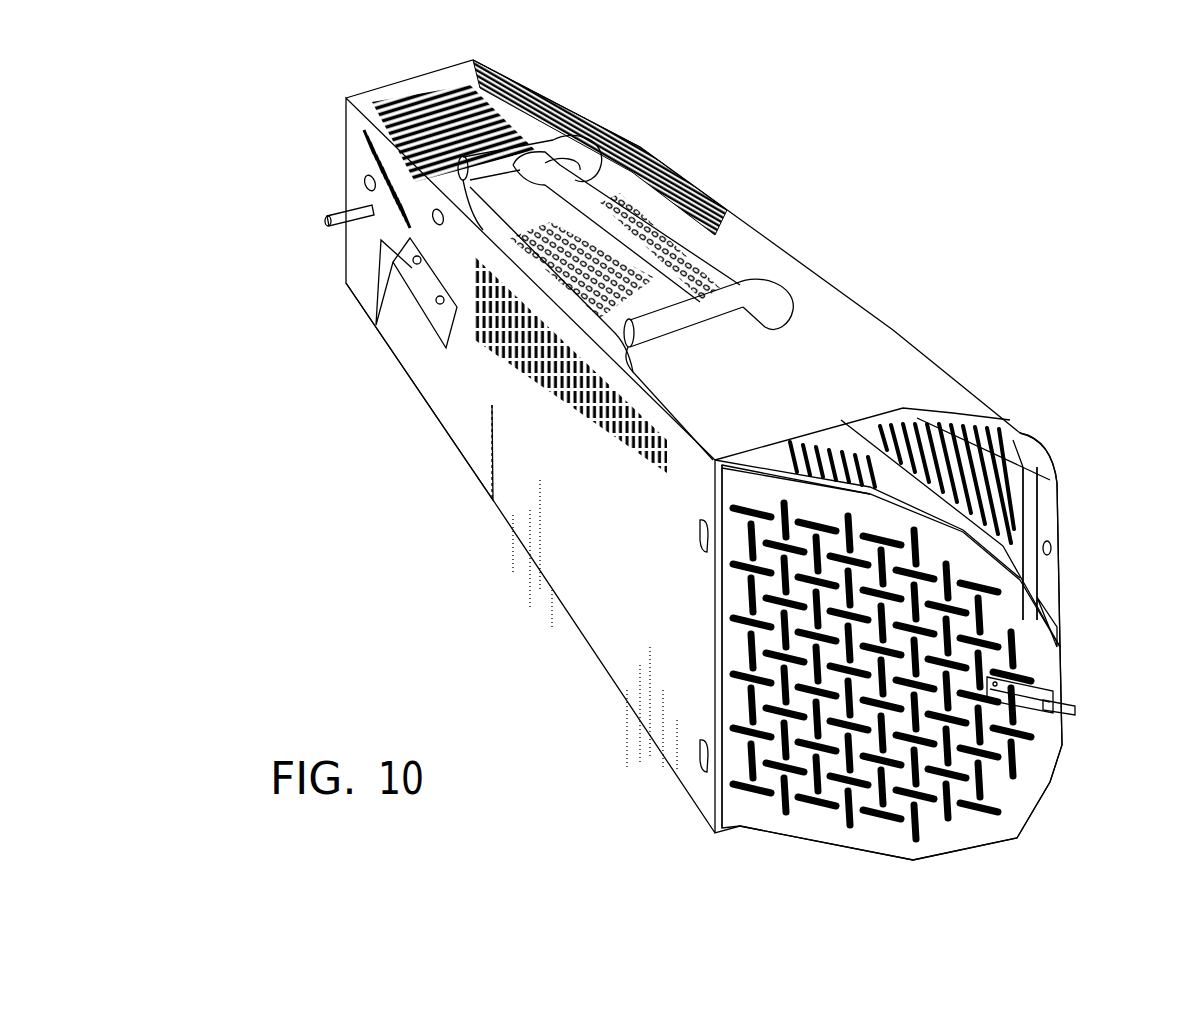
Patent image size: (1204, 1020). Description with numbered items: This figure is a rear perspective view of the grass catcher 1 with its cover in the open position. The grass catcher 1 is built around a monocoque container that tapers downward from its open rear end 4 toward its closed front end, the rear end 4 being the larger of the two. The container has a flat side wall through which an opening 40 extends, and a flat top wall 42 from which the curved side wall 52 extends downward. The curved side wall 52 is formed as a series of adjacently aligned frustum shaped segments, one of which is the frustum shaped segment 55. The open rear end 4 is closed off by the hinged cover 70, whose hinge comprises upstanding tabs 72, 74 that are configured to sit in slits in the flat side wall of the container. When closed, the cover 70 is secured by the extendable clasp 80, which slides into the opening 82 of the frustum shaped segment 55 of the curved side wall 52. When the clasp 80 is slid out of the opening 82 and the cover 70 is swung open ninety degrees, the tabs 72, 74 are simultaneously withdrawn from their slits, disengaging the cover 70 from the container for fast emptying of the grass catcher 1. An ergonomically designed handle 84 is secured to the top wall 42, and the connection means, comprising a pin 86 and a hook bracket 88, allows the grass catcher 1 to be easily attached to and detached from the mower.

The grass catcher 1 is at (862, 178).
The rear end 4 is at (1013, 503).
The opening 40 is at (463, 418).
The top wall 42 is at (815, 352).
The curved side wall 52 is at (1027, 420).
The frustum shaped segment 55 is at (1047, 512).
The hinged cover 70 is at (1035, 660).
The upstanding tab 72 is at (700, 528).
The upstanding tab 74 is at (703, 736).
The extendable clasp 80 is at (1027, 695).
The opening 82 is at (1045, 550).
The handle 84 is at (643, 272).
The pin 86 is at (357, 210).
The hook bracket 88 is at (413, 296).